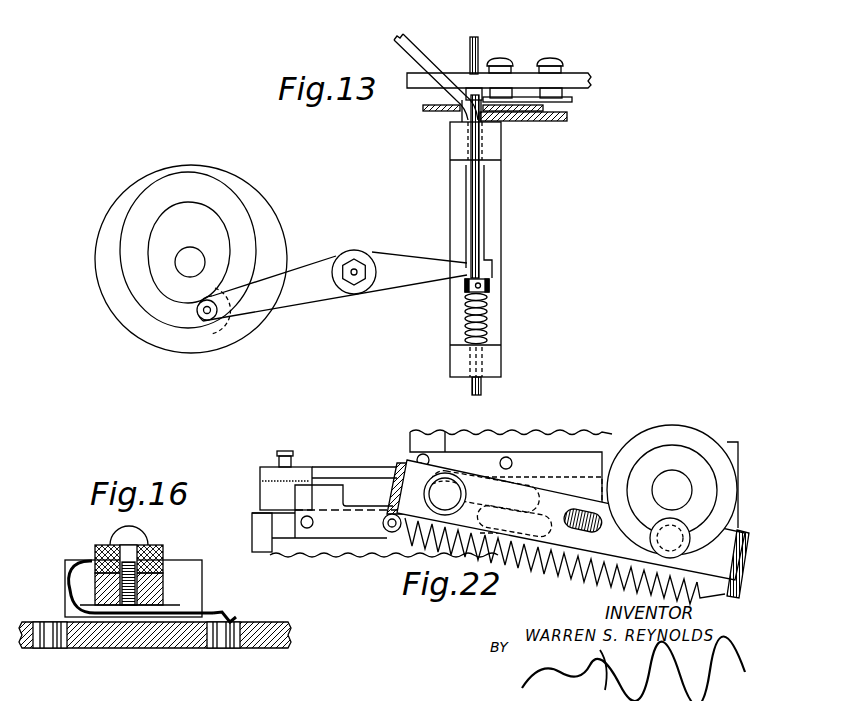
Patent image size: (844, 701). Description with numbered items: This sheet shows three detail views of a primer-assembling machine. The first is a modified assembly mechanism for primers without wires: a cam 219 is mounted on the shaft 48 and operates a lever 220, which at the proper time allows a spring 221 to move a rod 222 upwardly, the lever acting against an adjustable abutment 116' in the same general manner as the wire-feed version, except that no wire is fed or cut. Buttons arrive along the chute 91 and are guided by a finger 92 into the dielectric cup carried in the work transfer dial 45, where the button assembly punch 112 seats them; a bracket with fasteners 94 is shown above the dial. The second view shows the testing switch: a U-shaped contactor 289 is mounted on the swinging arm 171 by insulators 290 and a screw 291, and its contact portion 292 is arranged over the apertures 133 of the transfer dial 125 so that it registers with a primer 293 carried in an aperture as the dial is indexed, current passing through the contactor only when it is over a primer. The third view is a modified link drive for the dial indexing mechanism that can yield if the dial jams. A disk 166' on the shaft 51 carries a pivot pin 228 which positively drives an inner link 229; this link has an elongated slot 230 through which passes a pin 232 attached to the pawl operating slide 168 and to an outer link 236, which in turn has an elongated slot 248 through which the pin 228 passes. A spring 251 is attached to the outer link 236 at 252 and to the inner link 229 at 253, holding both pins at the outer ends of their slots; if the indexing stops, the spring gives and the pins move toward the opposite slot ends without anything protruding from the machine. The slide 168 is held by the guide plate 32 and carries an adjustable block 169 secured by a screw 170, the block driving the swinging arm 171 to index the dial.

In FIG. 13, the cam 219 is at (131, 193).
In FIG. 13, the shaft 48 is at (188, 262).
In FIG. 13, the lever 220 is at (310, 293).
In FIG. 13, the rod 222 is at (482, 238).
In FIG. 13, the adjustable abutment 116' is at (511, 294).
In FIG. 13, the spring 221 is at (487, 312).
In FIG. 13, the chute 91 is at (396, 36).
In FIG. 13, the finger 92 is at (473, 92).
In FIG. 13, the button assembly punch 112 is at (479, 42).
In FIG. 13, the bolts 94 is at (506, 60).
In FIG. 13, the work transfer dial 45 is at (423, 107).
In FIG. 22, the block 169 is at (272, 467).
In FIG. 22, the screw 170 is at (291, 453).
In FIG. 22, the pawl operating slide 168 is at (265, 498).
In FIG. 22, the guide plate 32 is at (333, 528).
In FIG. 22, the inner link 229 is at (398, 462).
In FIG. 22, the outer link 236 is at (558, 494).
In FIG. 22, the elongated slot 230 is at (518, 494).
In FIG. 22, the pin 232 is at (446, 493).
In FIG. 22, the elongated slot 248 is at (590, 510).
In FIG. 22, the spring attachment point 253 is at (390, 530).
In FIG. 22, the spring 251 is at (598, 581).
In FIG. 22, the spring attachment point 252 is at (735, 584).
In FIG. 22, the disk 166' is at (681, 477).
In FIG. 22, the shaft 51 is at (673, 486).
In FIG. 22, the pivot pin 228 is at (676, 547).
In FIG. 16, the transfer dial 125 is at (290, 637).
In FIG. 16, the primer 293 is at (48, 649).
In FIG. 16, the aperture 133 is at (213, 649).
In FIG. 16, the swinging arm 171 is at (65, 578).
In FIG. 16, the insulator 290 is at (164, 552).
In FIG. 16, the screw 291 is at (131, 541).
In FIG. 16, the U-shaped contactor 289 is at (71, 604).
In FIG. 16, the contact portion 292 is at (231, 621).